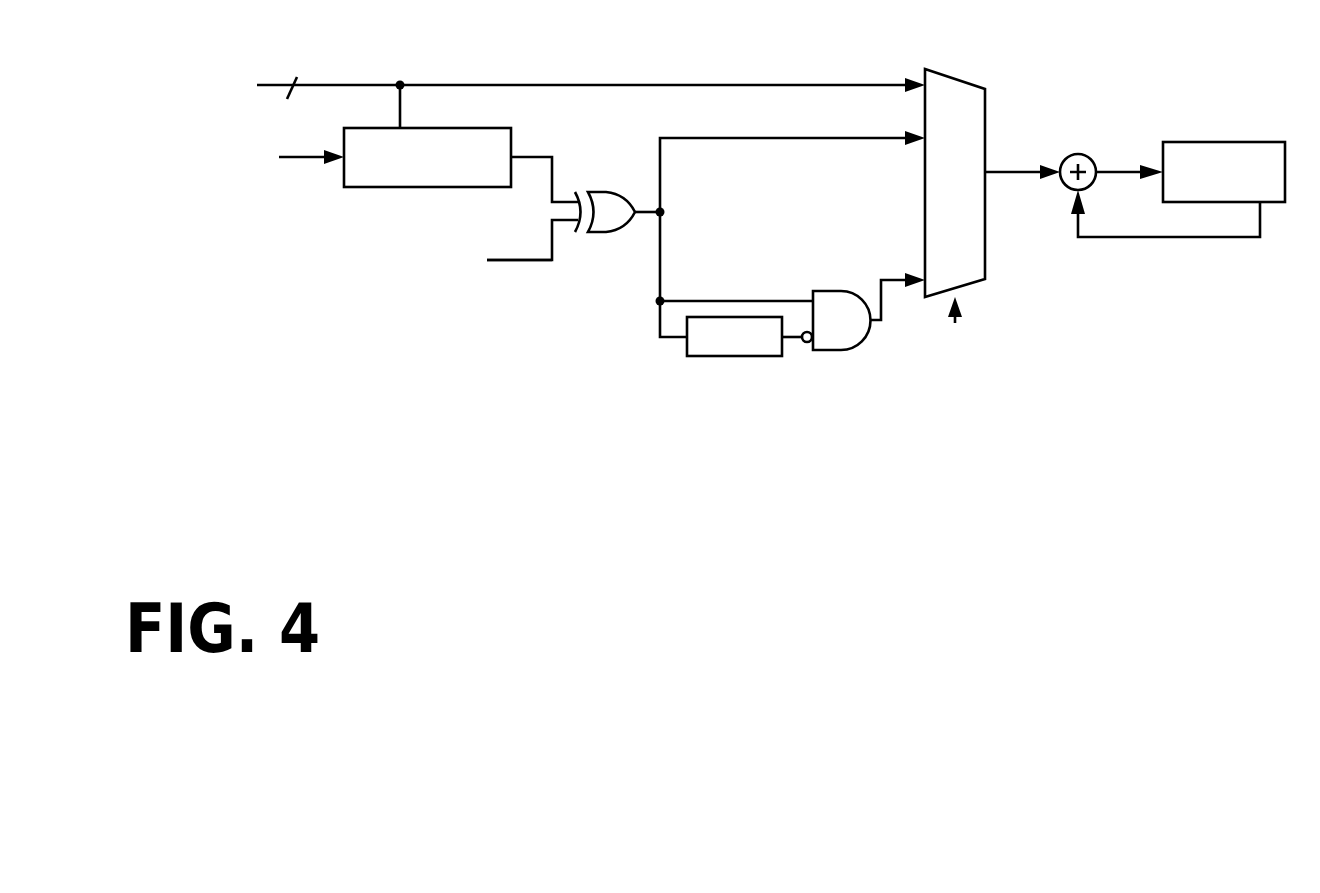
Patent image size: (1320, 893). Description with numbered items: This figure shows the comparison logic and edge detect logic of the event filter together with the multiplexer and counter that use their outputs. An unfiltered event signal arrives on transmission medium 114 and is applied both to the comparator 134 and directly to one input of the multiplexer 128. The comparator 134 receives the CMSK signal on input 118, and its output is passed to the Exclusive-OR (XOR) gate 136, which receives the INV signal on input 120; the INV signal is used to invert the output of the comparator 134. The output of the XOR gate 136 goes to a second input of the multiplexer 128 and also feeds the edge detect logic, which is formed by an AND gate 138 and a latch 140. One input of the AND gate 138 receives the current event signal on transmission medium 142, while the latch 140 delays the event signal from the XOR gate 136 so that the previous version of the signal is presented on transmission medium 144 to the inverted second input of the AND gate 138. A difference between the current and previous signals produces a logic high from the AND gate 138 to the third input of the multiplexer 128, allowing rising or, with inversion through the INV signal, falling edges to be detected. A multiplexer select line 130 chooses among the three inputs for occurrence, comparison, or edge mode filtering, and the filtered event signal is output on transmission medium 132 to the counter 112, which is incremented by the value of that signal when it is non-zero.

The counter 112 is at (1190, 139).
The transmission medium 114 is at (358, 80).
The input 118 is at (299, 165).
The input 120 is at (514, 270).
The multiplexer 128 is at (956, 72).
The multiplexer select line 130 is at (957, 320).
The transmission medium 132 is at (1006, 162).
The comparator 134 is at (371, 190).
The Exclusive-OR (XOR) gate 136 is at (605, 182).
The AND gate 138 is at (834, 355).
The latch 140 is at (731, 360).
The transmission medium 142 is at (719, 295).
The transmission medium 144 is at (793, 345).